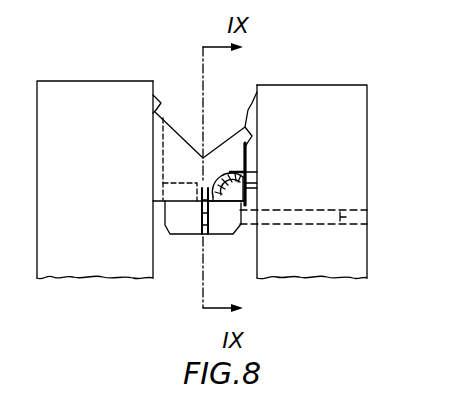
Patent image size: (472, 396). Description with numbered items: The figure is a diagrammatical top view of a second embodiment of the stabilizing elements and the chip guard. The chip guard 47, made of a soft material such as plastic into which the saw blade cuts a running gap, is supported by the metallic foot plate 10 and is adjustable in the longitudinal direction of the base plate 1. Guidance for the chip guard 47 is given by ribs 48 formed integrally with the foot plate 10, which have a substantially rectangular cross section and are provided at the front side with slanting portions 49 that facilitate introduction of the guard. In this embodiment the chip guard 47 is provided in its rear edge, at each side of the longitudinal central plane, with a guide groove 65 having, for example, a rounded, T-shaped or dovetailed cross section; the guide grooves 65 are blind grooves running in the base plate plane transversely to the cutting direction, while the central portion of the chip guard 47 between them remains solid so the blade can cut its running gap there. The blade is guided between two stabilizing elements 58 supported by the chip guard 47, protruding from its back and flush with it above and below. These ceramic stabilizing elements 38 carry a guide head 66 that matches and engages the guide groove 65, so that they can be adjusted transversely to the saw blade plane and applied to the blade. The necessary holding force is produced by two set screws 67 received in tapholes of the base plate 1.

The chip guard 47 is at (173, 155).
The slanting portions 49 is at (163, 96).
The ribs 48 is at (253, 115).
The base plate 1 is at (313, 149).
The foot plate 10 is at (318, 107).
The guide groove 65 is at (246, 170).
The guide head 66 is at (237, 189).
The set screws 67 is at (290, 223).
The stabilizing elements 58 is at (160, 210).
The stabilizing elements 38 is at (183, 222).